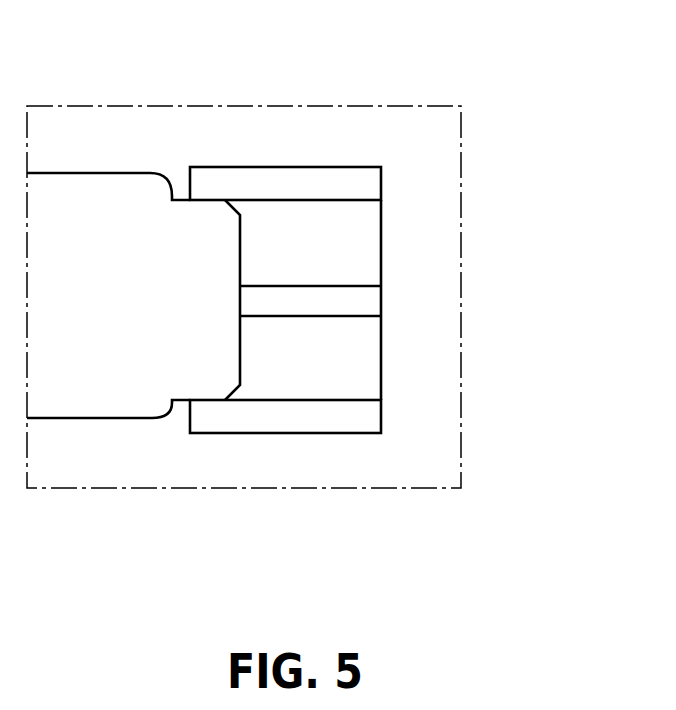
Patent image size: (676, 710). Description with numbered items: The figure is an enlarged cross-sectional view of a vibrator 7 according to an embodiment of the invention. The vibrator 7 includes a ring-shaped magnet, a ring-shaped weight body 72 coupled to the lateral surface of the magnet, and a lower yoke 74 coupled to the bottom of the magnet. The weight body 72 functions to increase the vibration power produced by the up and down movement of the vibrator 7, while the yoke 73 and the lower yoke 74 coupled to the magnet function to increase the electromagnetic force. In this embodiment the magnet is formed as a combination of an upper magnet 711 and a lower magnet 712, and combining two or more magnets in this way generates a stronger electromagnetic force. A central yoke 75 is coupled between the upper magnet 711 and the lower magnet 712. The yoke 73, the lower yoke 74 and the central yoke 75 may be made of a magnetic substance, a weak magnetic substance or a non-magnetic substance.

The vibrator 7 is at (371, 140).
The weight body 72 is at (92, 205).
The yoke 73 is at (368, 182).
The upper magnet 711 is at (360, 244).
The central yoke 75 is at (368, 300).
The lower magnet 712 is at (362, 369).
The lower yoke 74 is at (329, 420).